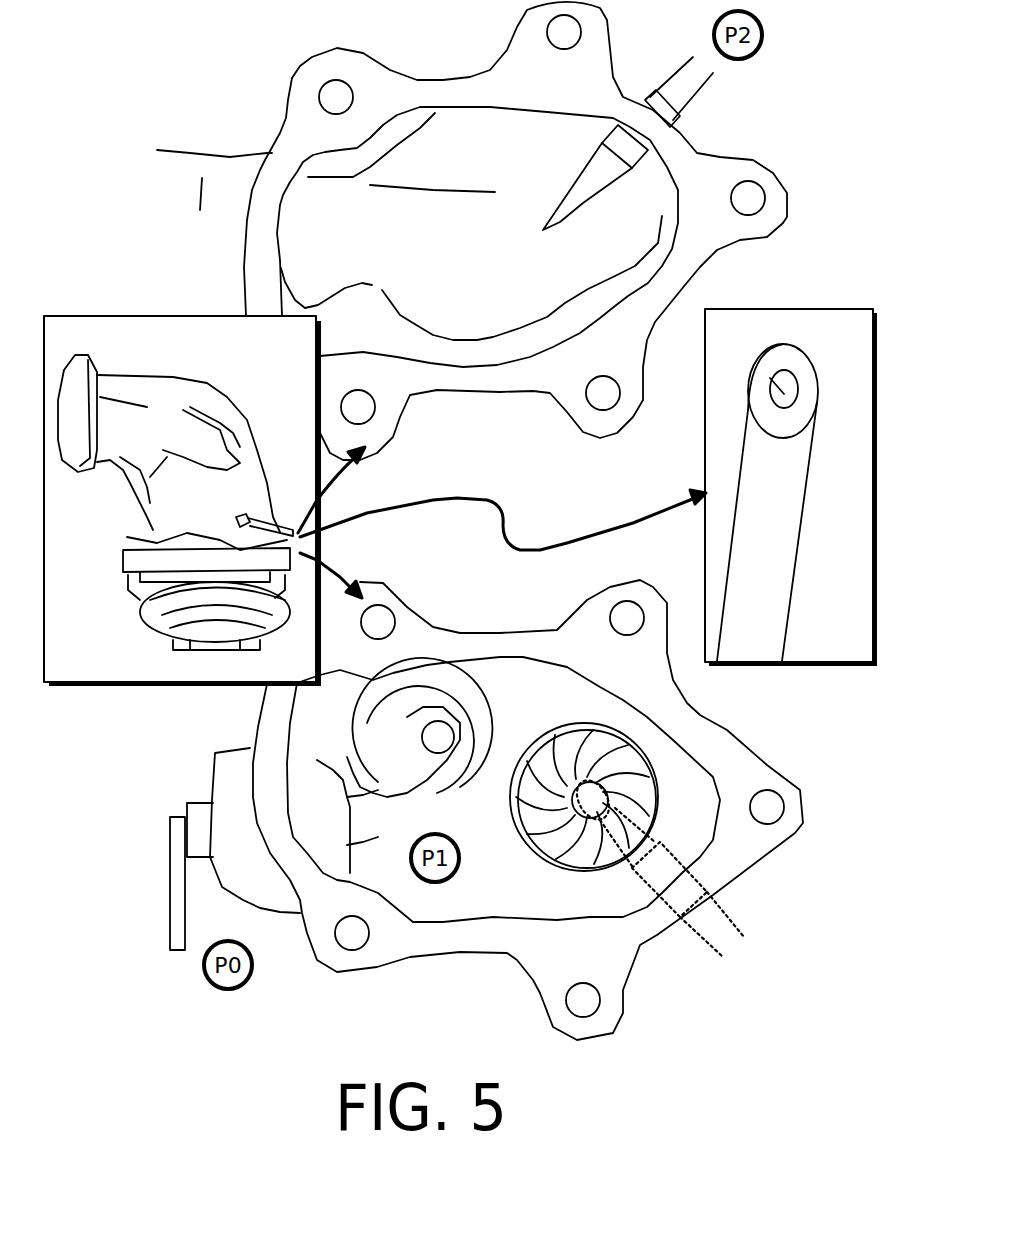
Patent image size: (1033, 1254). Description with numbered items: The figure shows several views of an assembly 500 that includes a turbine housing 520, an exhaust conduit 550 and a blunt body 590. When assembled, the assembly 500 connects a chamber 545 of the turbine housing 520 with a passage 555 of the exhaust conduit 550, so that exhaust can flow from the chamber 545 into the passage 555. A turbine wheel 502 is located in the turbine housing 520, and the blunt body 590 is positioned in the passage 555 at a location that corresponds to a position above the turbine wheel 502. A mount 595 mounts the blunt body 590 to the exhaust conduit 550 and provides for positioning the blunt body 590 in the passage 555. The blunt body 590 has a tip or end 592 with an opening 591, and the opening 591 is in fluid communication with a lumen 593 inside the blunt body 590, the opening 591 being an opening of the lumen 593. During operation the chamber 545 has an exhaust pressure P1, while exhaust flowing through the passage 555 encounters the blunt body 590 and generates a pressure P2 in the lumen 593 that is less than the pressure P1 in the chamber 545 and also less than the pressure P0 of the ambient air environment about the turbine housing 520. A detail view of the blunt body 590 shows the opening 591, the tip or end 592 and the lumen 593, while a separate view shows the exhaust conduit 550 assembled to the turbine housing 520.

The assembly 500 is at (142, 349).
The turbine wheel 502 is at (530, 835).
The turbine housing 520 is at (147, 620).
The chamber 545 is at (512, 715).
The exhaust conduit 550 is at (285, 117).
The passage 555 is at (452, 250).
The blunt body 590 is at (580, 205).
The opening 591 is at (788, 370).
The tip or end 592 is at (800, 343).
The lumen 593 is at (782, 385).
The mount 595 is at (675, 122).